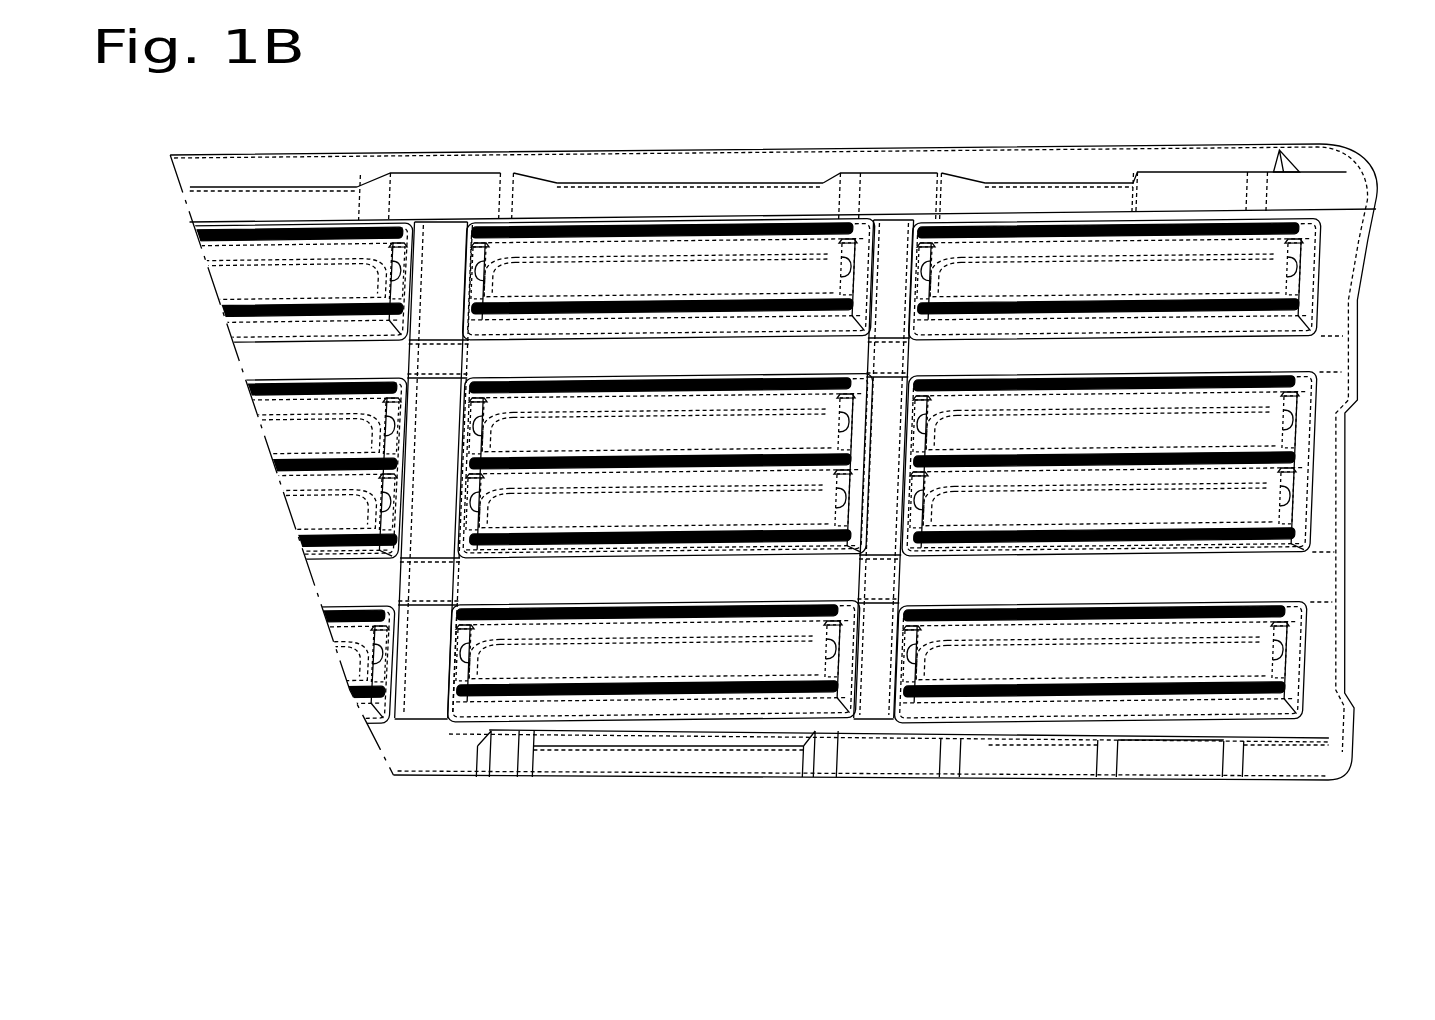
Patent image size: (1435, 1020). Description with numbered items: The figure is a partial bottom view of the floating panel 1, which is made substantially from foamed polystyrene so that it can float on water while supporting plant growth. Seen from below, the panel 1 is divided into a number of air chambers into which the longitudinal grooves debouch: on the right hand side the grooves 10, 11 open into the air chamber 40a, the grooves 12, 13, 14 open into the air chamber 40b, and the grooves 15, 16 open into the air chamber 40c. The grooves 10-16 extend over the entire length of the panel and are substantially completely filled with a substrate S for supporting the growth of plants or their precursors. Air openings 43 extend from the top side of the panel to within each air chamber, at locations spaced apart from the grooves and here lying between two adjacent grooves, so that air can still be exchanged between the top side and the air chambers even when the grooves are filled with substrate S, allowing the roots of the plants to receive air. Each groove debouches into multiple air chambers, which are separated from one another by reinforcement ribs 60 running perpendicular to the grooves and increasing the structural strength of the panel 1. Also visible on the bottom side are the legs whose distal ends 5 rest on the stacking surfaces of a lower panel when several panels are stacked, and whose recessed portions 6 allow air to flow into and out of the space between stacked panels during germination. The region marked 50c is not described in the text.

The panel 1 is at (432, 104).
The distal ends 5 is at (668, 205).
The recessed portions 6 is at (450, 195).
The groove 10 is at (1278, 690).
The groove 11 is at (1280, 608).
The groove 12 is at (1285, 533).
The groove 13 is at (1285, 460).
The groove 14 is at (1290, 383).
The groove 15 is at (600, 305).
The groove 16 is at (315, 232).
The air chamber 40a is at (1228, 709).
The air chamber 40b is at (1252, 547).
The air chamber 40c is at (1254, 322).
The air openings 43 is at (410, 270).
The pocket 50c is at (1090, 250).
The reinforcement ribs 60 is at (463, 291).
The substrate S is at (752, 235).